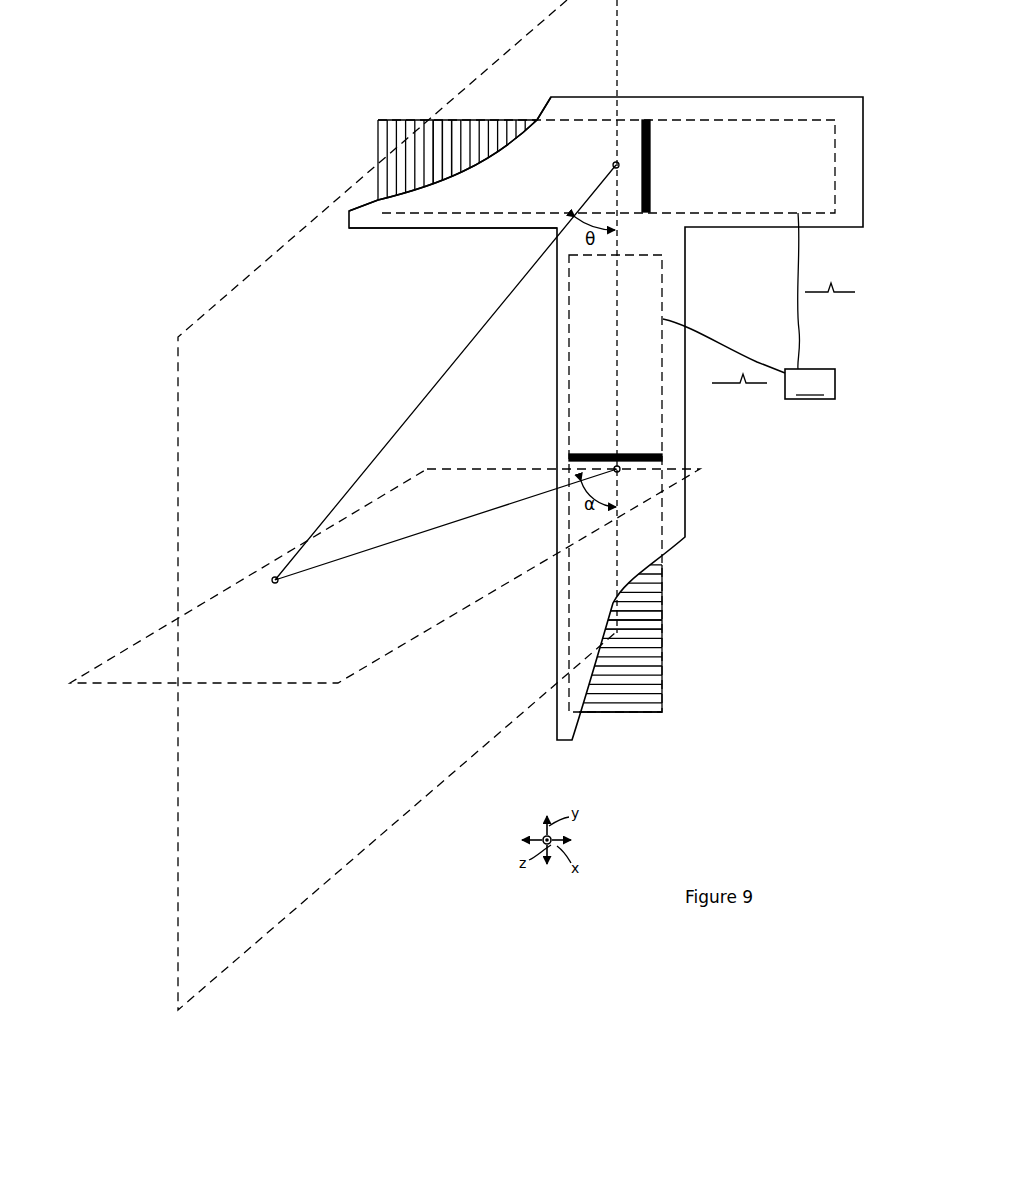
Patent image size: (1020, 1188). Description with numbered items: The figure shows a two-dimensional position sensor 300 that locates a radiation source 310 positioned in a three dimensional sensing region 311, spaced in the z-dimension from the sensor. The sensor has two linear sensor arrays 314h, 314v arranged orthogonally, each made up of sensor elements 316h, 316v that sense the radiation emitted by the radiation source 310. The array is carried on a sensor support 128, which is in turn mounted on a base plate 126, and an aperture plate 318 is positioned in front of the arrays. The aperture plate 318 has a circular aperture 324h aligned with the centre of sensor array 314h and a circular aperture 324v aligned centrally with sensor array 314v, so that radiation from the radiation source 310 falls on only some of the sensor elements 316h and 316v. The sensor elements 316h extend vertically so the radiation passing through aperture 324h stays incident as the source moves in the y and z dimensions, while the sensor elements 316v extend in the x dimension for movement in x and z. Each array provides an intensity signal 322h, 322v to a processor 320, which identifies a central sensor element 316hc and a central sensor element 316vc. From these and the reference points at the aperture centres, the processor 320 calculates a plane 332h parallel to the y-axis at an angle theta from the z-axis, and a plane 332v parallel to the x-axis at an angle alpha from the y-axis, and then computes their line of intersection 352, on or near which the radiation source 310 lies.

The two-dimensional position sensor 300 is at (736, 542).
The radiation source 310 is at (277, 582).
The three dimensional sensing region 311 is at (141, 745).
The sensor array 314h is at (392, 142).
The sensor array 314v is at (652, 655).
The sensor elements 316h is at (458, 137).
The sensor elements 316v is at (653, 620).
The central sensor element 316hc is at (648, 118).
The central sensor element 316vc is at (662, 459).
The aperture plate 318 is at (793, 108).
The processor 320 is at (810, 384).
The intensity signal 322h is at (823, 293).
The intensity signal 322v is at (740, 385).
The aperture 324h is at (614, 162).
The aperture 324v is at (620, 471).
The plane 332h is at (248, 298).
The plane 332v is at (145, 655).
The line of intersection 352 is at (373, 548).
The base plate 126 is at (452, 238).
The sensor support 128 is at (418, 126).